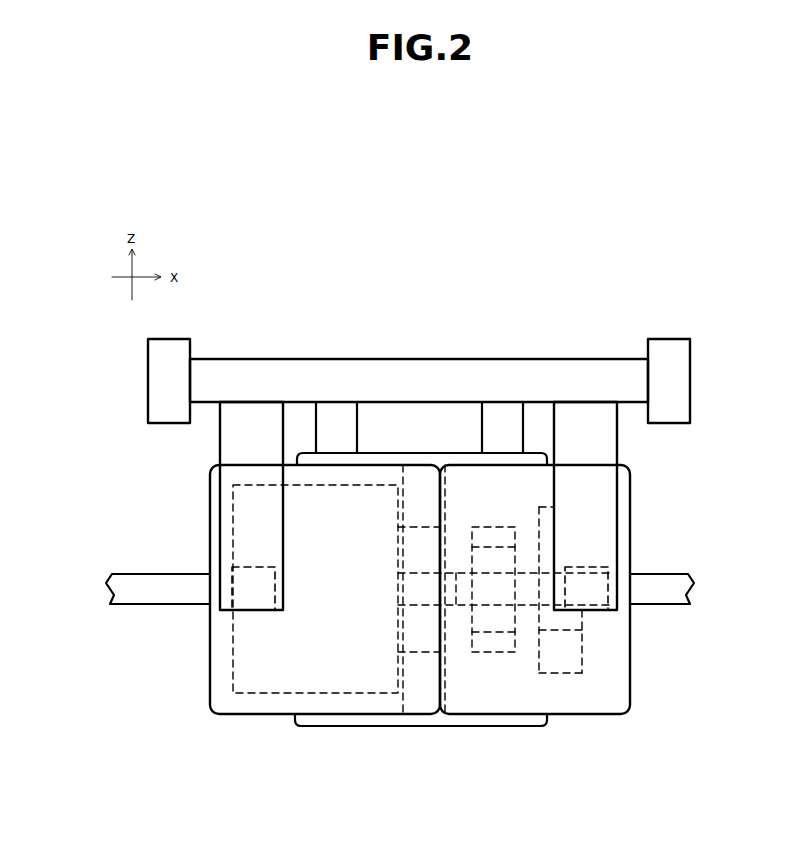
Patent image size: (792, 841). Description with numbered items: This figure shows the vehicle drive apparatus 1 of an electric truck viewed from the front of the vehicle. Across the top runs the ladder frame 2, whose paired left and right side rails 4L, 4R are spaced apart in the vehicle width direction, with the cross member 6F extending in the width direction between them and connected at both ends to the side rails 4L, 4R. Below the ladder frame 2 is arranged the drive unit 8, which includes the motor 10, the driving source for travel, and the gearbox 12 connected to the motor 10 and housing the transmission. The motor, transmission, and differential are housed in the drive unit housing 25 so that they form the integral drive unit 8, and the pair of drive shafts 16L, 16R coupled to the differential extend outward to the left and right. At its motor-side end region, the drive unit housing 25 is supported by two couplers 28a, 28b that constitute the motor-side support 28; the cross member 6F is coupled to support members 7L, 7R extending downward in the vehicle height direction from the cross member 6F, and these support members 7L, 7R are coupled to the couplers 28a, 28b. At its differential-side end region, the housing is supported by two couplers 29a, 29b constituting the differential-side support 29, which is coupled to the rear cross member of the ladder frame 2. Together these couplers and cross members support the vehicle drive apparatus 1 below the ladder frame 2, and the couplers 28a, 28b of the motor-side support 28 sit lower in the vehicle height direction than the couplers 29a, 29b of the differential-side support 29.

The vehicle drive apparatus 1 is at (684, 546).
The ladder frame 2 is at (708, 381).
The side rail 4R is at (170, 339).
The side rail 4L is at (670, 339).
The cross member 6F is at (525, 359).
The support member 7R is at (220, 438).
The support member 7L is at (618, 447).
The drive unit 8 is at (522, 746).
The motor 10 is at (254, 722).
The gearbox 12 is at (567, 726).
The drive shaft 16R is at (170, 605).
The drive shaft 16L is at (672, 605).
The drive unit housing 25 is at (603, 715).
The motor-side support 28 is at (402, 778).
The coupler 28a is at (582, 610).
The coupler 28b is at (253, 610).
The differential-side support 29 is at (438, 211).
The coupler 29a is at (505, 402).
The coupler 29b is at (345, 402).